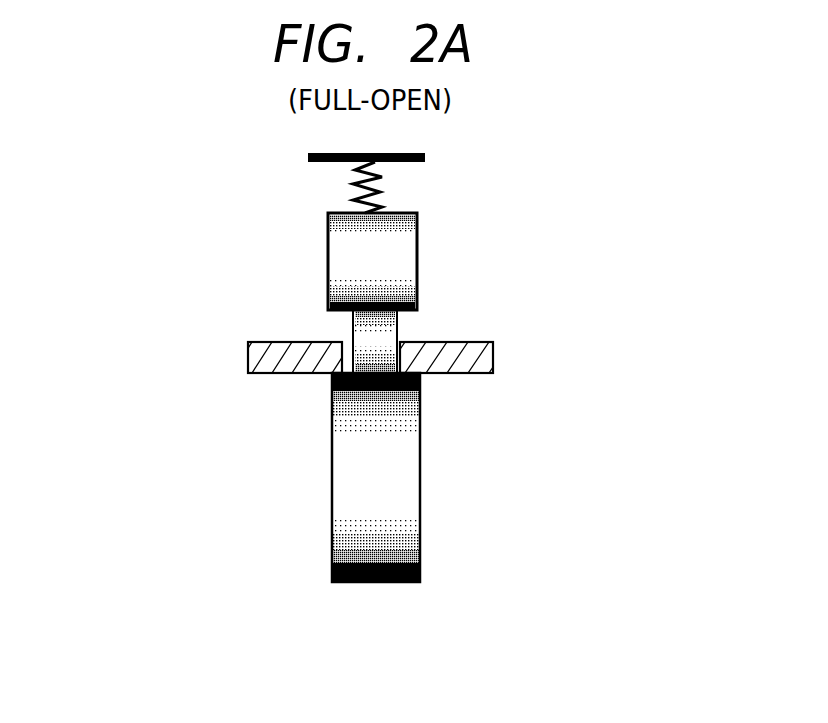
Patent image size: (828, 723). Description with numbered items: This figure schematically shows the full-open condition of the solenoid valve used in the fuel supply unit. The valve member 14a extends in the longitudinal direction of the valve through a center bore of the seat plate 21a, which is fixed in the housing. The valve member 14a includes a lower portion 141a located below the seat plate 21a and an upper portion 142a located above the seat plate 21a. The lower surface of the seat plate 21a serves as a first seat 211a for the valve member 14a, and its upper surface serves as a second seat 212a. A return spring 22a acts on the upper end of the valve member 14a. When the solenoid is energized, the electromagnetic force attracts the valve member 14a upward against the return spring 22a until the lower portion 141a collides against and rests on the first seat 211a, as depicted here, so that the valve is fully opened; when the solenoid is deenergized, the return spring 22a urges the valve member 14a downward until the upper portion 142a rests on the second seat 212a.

The return spring 22a is at (353, 180).
The upper portion of the valve member 142a is at (417, 233).
The valve member 14a is at (397, 322).
The seat plate 21a is at (248, 358).
The second seat 212a is at (287, 341).
The first seat 211a is at (300, 373).
The lower portion of the valve member 141a is at (418, 500).